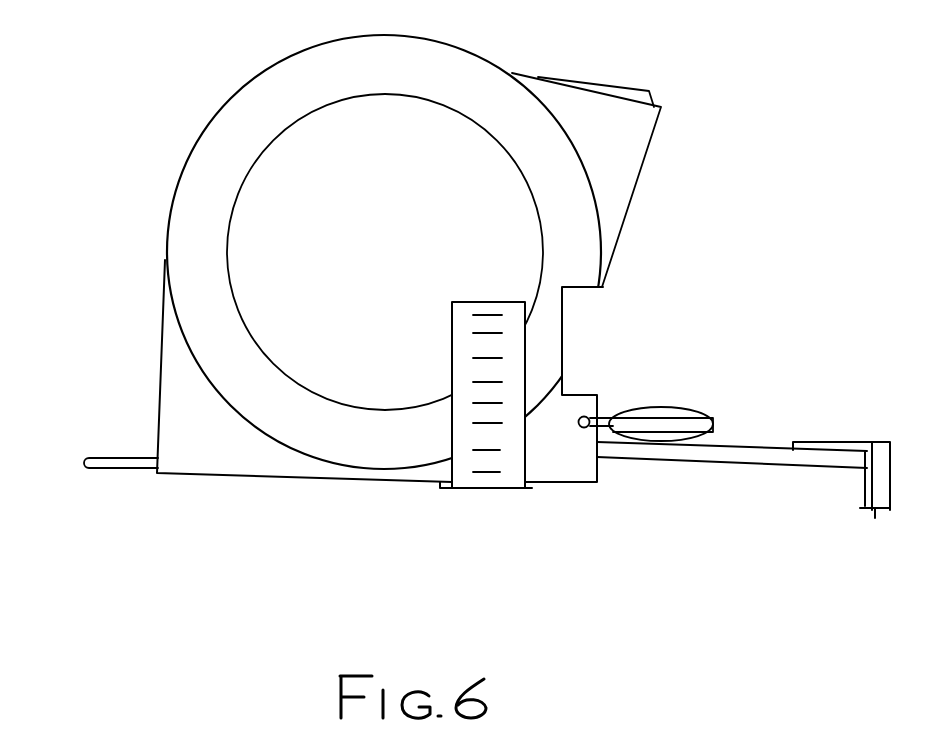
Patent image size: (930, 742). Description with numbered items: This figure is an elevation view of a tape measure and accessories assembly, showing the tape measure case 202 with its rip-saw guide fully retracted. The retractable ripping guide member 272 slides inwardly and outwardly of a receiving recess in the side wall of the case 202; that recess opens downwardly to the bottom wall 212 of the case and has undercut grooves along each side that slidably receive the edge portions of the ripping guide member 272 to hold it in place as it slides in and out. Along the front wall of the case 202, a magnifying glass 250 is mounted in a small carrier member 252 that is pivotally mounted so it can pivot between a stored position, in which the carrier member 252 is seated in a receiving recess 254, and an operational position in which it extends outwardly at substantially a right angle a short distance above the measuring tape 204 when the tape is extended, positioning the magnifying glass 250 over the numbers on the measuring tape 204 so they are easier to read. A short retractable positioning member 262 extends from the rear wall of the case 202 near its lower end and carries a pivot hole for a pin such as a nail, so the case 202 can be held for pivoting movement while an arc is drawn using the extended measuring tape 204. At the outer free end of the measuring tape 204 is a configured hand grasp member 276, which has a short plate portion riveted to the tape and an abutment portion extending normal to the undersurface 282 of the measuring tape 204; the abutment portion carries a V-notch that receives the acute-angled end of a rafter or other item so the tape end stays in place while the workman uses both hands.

The tape measure case 202 is at (212, 115).
The bottom wall 212 is at (263, 477).
The retractable positioning member 262 is at (113, 455).
The retractable ripping guide member 272 is at (483, 462).
The receiving recess 254 is at (583, 337).
The magnifying glass 250 is at (674, 408).
The carrier member 252 is at (668, 426).
The measuring tape 204 is at (767, 445).
The undersurface 282 is at (720, 465).
The hand grasp member 276 is at (877, 510).